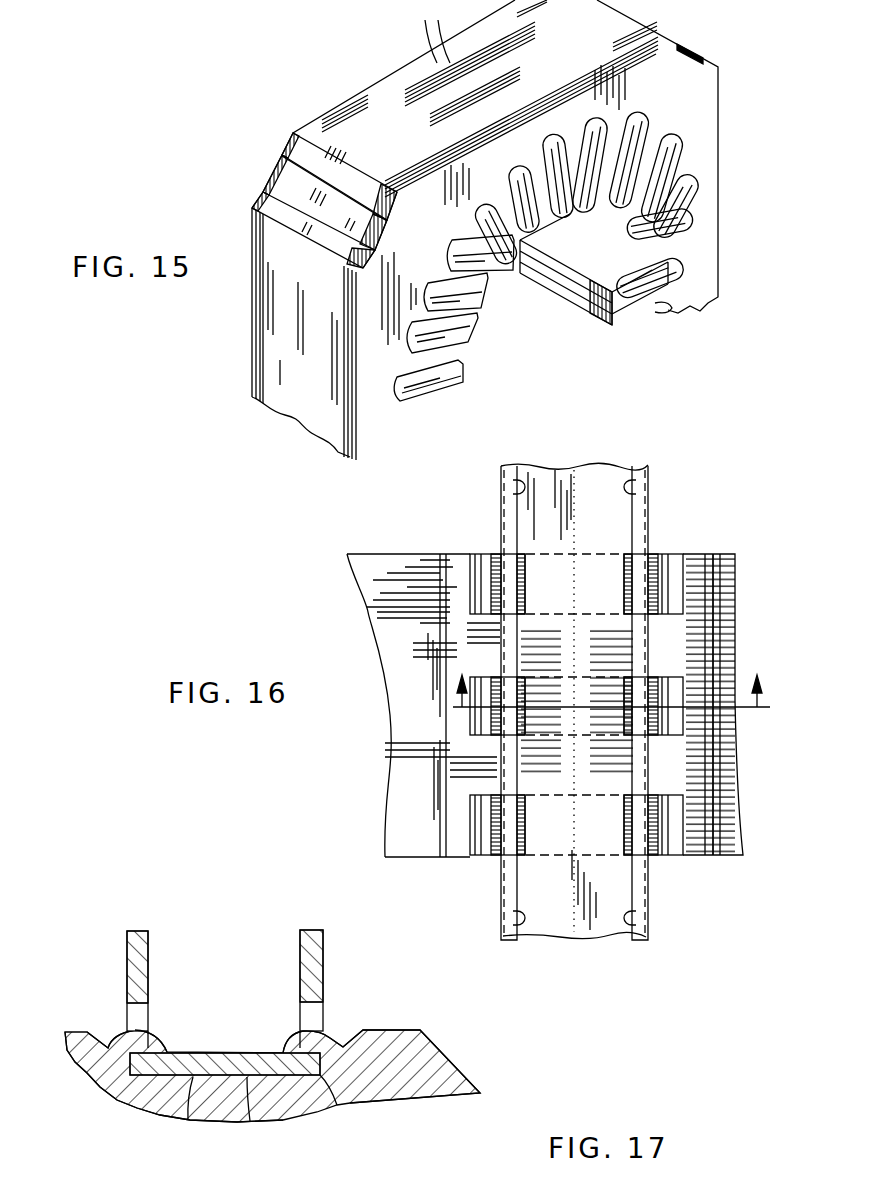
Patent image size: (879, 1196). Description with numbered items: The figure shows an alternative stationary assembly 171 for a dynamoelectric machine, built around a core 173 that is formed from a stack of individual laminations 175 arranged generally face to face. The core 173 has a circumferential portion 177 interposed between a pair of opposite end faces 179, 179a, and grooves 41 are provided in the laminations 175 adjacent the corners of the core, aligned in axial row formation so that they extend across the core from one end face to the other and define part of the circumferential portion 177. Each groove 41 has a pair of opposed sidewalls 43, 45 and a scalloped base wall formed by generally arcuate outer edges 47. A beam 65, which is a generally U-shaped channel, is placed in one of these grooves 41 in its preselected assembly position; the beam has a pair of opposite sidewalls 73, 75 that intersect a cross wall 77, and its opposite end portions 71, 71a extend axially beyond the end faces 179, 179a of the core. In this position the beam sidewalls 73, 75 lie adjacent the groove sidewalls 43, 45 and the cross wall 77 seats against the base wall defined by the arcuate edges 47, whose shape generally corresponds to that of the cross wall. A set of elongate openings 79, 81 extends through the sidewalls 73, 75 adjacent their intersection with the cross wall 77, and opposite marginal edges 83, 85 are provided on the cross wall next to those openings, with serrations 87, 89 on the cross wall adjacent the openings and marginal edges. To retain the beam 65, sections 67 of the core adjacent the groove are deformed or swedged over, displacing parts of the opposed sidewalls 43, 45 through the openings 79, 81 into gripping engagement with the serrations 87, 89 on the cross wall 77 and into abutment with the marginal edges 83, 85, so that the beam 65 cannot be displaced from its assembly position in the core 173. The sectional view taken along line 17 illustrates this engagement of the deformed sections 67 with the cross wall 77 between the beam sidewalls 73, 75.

In FIG. 16, the section line 17— 17 is at (614, 676).
In FIG. 15, the grooves 41 is at (277, 173).
In FIG. 17, the grooves 41 is at (188, 1120).
In FIG. 16, the opposed sidewall 43 is at (497, 622).
In FIG. 17, the opposed sidewall 43 is at (115, 1085).
In FIG. 16, the opposed sidewall 45 is at (650, 631).
In FIG. 17, the opposed sidewall 45 is at (323, 1080).
In FIG. 17, the arcuate outer edges 47 is at (250, 1121).
In FIG. 17, the beam 65 is at (229, 946).
In FIG. 16, the deformed sections 67 is at (528, 598).
In FIG. 17, the deformed sections 67 is at (152, 1042).
In FIG. 16, the opposite end portion 71 is at (575, 923).
In FIG. 16, the opposite end portion 71a is at (583, 466).
In FIG. 16, the opposite sidewall 73 is at (510, 943).
In FIG. 17, the opposite sidewall 73 is at (140, 930).
In FIG. 16, the opposite sidewall 75 is at (643, 940).
In FIG. 17, the opposite sidewall 75 is at (313, 930).
In FIG. 17, the cross wall 77 is at (228, 1053).
In FIG. 16, the opening 79 is at (507, 920).
In FIG. 17, the opening 79 is at (130, 1003).
In FIG. 16, the opening 81 is at (645, 920).
In FIG. 17, the opening 81 is at (323, 1002).
In FIG. 16, the opposite marginal edge 83 is at (503, 770).
In FIG. 17, the opposite marginal edge 83 is at (130, 1076).
In FIG. 16, the opposite marginal edge 85 is at (657, 775).
In FIG. 17, the opposite marginal edge 85 is at (325, 1062).
In FIG. 16, the serrations 87 is at (548, 778).
In FIG. 16, the serrations 89 is at (610, 778).
In FIG. 16, the stationary assembly 171 is at (722, 440).
In FIG. 15, the core 173 is at (330, 70).
In FIG. 16, the core 173 is at (343, 589).
In FIG. 17, the core 173 is at (440, 1057).
In FIG. 15, the laminations 175 is at (421, 31).
In FIG. 16, the laminations 175 is at (729, 607).
In FIG. 15, the circumferential portion 177 is at (347, 127).
In FIG. 16, the circumferential portion 177 is at (735, 803).
In FIG. 17, the circumferential portion 177 is at (390, 1028).
In FIG. 15, the opposite end face 179 is at (367, 430).
In FIG. 16, the opposite end face 179 is at (725, 857).
In FIG. 15, the opposite end face 179a is at (252, 352).
In FIG. 16, the opposite end face 179a is at (713, 553).